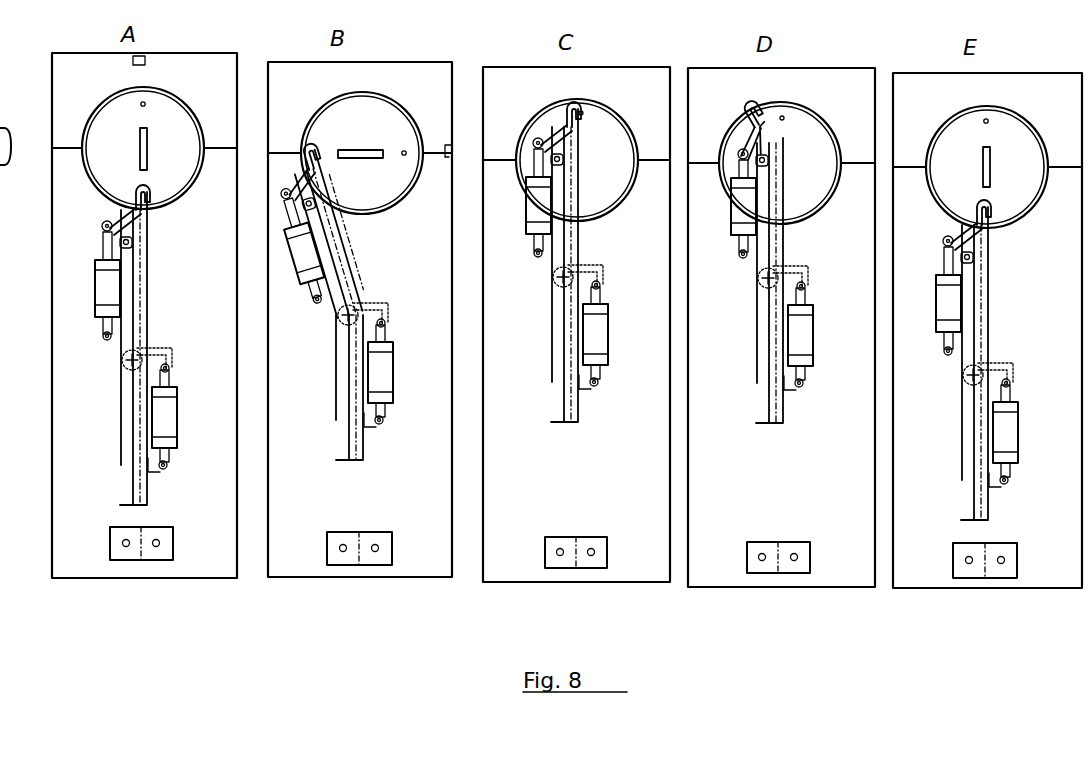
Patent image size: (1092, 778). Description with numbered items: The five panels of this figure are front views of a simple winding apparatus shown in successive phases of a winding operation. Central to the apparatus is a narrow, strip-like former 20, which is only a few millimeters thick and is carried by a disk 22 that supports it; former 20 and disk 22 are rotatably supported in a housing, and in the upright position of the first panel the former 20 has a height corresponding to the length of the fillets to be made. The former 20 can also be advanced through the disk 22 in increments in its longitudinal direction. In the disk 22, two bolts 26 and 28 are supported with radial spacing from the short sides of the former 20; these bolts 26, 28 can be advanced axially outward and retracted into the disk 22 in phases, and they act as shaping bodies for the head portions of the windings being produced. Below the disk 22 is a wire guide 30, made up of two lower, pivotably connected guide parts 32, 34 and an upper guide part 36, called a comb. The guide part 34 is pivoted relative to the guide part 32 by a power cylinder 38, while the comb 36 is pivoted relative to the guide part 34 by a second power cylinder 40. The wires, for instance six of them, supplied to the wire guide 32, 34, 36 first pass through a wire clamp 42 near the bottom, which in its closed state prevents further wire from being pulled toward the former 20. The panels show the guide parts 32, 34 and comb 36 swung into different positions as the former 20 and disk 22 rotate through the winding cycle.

In FIG. 8A, the former 20 is at (150, 148).
In FIG. 8A, the disk 22 is at (183, 142).
In FIG. 8A, the bolt 26 is at (144, 102).
In FIG. 8B, the bolt 26 is at (405, 151).
In FIG. 8A, the bolt 28 is at (163, 216).
In FIG. 8C, the bolt 28 is at (607, 103).
In FIG. 8D, the bolt 28 is at (781, 123).
In FIG. 8E, the bolt 28 is at (1013, 154).
In FIG. 8A, the wire guide 30 is at (167, 348).
In FIG. 8D, the wire guide 30 is at (811, 280).
In FIG. 8A, the guide part 32 is at (126, 384).
In FIG. 8A, the guide part 34 is at (170, 357).
In FIG. 8A, the comb 36 is at (73, 216).
In FIG. 8A, the power cylinder 38 is at (181, 418).
In FIG. 8A, the power cylinder 40 is at (92, 280).
In FIG. 8A, the wire clamp 42 is at (160, 539).